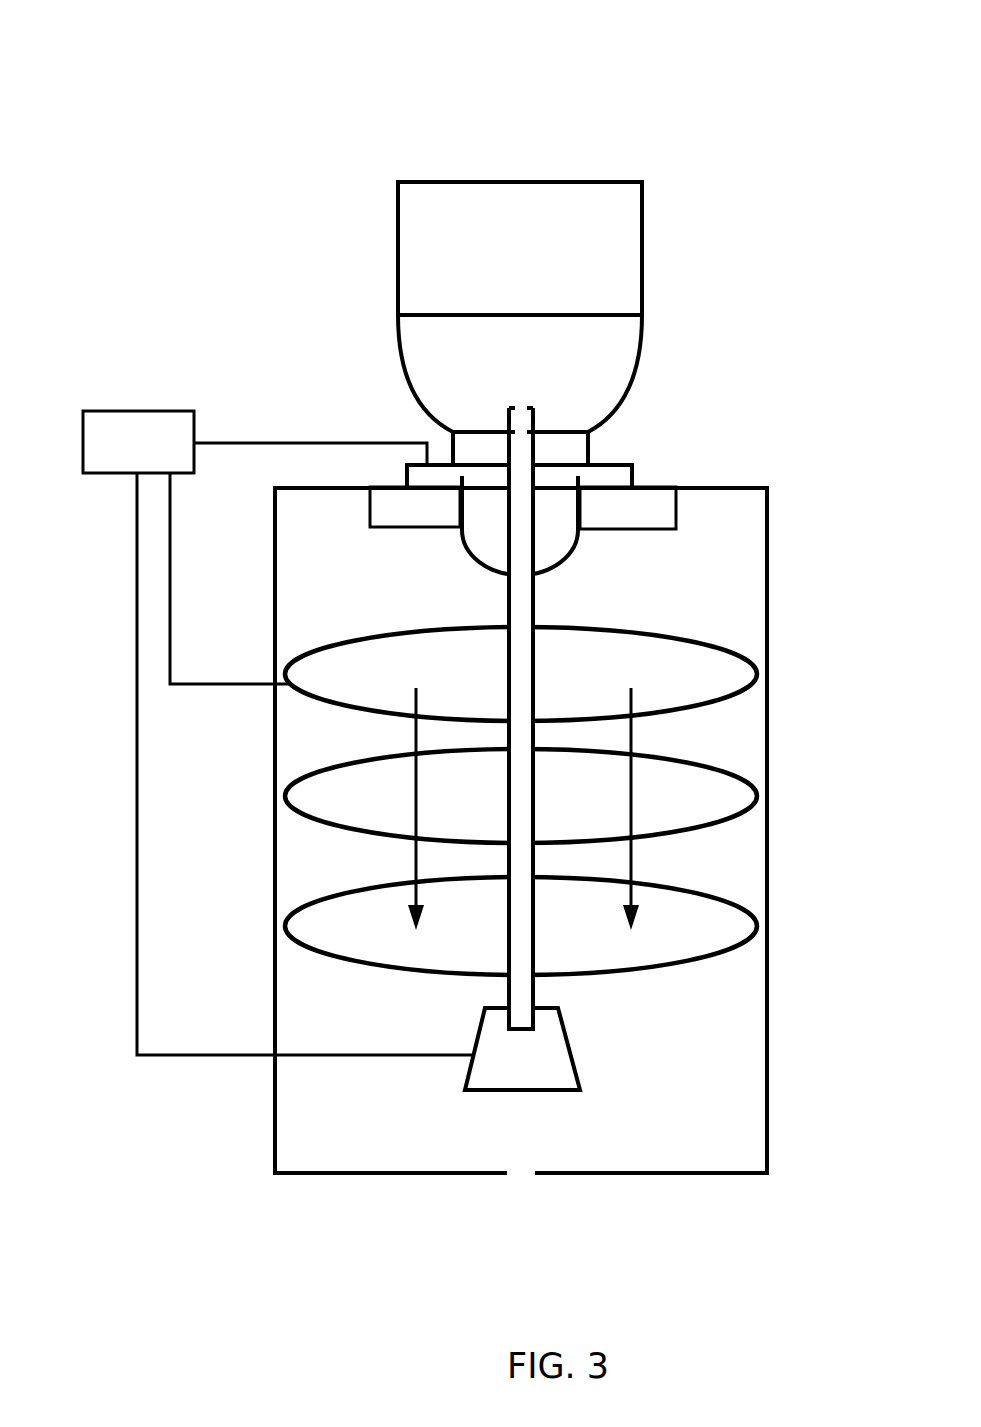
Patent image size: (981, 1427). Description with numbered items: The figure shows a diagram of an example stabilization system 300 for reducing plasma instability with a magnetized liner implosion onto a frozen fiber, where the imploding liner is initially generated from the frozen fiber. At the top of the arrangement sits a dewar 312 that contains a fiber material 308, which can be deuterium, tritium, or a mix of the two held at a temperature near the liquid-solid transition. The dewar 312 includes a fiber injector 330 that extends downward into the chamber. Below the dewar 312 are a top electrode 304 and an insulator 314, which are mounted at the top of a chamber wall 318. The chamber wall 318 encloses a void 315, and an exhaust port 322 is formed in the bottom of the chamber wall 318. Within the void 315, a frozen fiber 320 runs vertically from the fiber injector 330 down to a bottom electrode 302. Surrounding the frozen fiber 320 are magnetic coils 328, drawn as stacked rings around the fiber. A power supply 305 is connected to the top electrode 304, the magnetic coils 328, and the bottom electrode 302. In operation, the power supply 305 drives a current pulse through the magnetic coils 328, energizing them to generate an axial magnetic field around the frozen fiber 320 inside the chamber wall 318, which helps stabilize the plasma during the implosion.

The stabilization system 300 is at (191, 53).
The bottom electrode 302 is at (566, 1032).
The top electrode 304 is at (404, 477).
The power supply 305 is at (154, 461).
The fiber material 308 is at (568, 315).
The dewar 312 is at (489, 182).
The insulator 314 is at (642, 496).
The void 315 is at (351, 1123).
The chamber wall 318 is at (275, 585).
The frozen fiber 320 is at (534, 942).
The exhaust port 322 is at (517, 1197).
The magnetic coils 328 is at (357, 758).
The fiber injector 330 is at (534, 408).